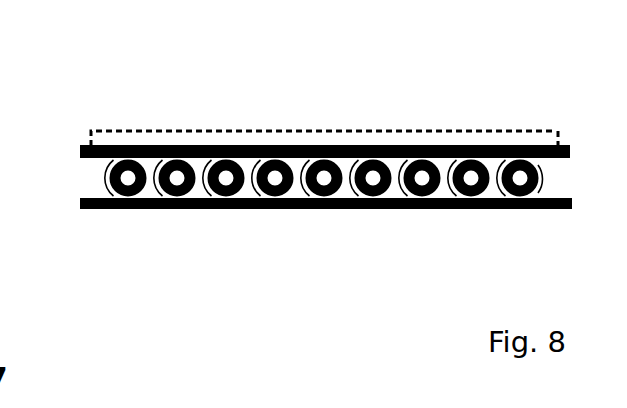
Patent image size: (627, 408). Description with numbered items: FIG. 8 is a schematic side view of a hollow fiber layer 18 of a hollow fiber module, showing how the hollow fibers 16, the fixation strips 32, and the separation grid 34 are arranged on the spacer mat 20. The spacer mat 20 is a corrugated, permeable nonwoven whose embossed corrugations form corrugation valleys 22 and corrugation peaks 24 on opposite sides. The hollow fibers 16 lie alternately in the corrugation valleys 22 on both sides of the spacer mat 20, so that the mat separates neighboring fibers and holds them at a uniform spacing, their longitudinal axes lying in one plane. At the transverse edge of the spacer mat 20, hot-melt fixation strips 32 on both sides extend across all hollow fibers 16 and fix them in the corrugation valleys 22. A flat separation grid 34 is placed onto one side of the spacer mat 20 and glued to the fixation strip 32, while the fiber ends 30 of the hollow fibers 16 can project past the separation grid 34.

The hollow fiber 16 is at (126, 162).
The hollow fiber layer 18 is at (83, 180).
The spacer mat 20 is at (107, 183).
The corrugation valley 22 is at (395, 158).
The corrugation peak 24 is at (328, 200).
The fiber end 30 is at (522, 200).
The fixation strip 32 is at (562, 150).
The separation grid 34 is at (218, 136).